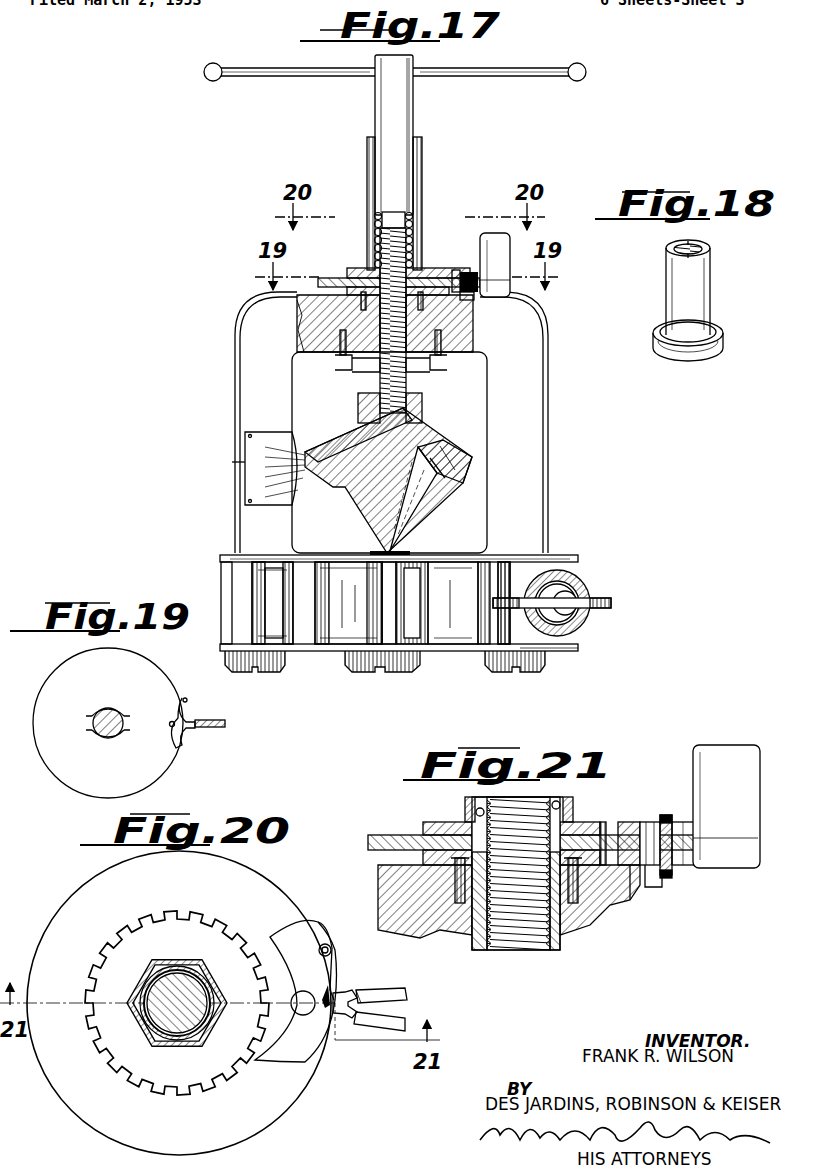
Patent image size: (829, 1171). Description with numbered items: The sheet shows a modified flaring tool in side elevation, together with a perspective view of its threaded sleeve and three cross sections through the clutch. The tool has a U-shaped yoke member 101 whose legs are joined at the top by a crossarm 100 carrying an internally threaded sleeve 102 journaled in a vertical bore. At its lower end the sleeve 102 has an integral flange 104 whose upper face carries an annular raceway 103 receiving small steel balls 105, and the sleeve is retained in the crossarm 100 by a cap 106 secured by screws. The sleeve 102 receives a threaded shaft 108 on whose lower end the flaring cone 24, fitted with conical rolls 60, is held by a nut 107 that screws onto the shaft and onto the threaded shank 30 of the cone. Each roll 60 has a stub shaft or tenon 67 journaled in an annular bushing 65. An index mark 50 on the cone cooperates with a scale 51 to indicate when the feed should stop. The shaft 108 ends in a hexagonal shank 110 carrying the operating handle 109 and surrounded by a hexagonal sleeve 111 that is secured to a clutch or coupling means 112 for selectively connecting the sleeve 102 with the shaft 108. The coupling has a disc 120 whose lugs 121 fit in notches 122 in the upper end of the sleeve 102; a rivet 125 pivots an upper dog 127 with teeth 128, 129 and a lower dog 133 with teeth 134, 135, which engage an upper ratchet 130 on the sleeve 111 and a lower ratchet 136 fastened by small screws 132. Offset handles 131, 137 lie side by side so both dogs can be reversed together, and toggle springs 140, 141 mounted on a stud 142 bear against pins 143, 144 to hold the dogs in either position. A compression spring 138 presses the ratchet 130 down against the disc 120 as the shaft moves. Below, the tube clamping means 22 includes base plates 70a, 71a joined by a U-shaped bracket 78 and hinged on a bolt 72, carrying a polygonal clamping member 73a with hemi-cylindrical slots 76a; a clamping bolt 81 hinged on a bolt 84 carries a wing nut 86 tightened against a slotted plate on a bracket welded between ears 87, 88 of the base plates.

In FIG. 17, the tube clamping means 22 is at (603, 580).
In FIG. 17, the flaring cone 24 is at (356, 505).
In FIG. 17, the threaded shank 30 is at (372, 412).
In FIG. 17, the index mark 50 is at (295, 440).
In FIG. 17, the scale 51 is at (232, 462).
In FIG. 17, the roller 60 is at (425, 510).
In FIG. 17, the annular bushing 65 is at (466, 472).
In FIG. 17, the stub shaft 67 is at (440, 458).
In FIG. 17, the base plate 70a is at (220, 555).
In FIG. 17, the base plate 71a is at (220, 648).
In FIG. 17, the hinge bolt 72 is at (242, 660).
In FIG. 17, the polygonal tube clamping member 73a is at (395, 565).
In FIG. 17, the hemi-cylindrical slot 76a is at (343, 640).
In FIG. 17, the U-shaped bracket 78 is at (228, 580).
In FIG. 17, the clamping bolt 81 is at (577, 600).
In FIG. 17, the bolt 84 is at (533, 667).
In FIG. 17, the wing nut 86 is at (612, 603).
In FIG. 17, the ear 87 is at (572, 556).
In FIG. 17, the ear 88 is at (575, 651).
In FIG. 17, the crossarm 100 is at (460, 338).
In FIG. 17, the yoke member 101 is at (549, 352).
In FIG. 17, the internally threaded sleeve 102 is at (316, 334).
In FIG. 18, the internally threaded sleeve 102 is at (708, 290).
In FIG. 19, the internally threaded sleeve 102 is at (118, 705).
In FIG. 21, the internally threaded sleeve 102 is at (552, 940).
In FIG. 18, the annular raceway 103 is at (660, 322).
In FIG. 17, the integral flange 104 is at (368, 372).
In FIG. 18, the integral flange 104 is at (722, 342).
In FIG. 17, the steel balls 105 is at (350, 366).
In FIG. 17, the cap 106 is at (440, 368).
In FIG. 17, the nut 107 is at (422, 402).
In FIG. 17, the threaded shaft 108 is at (405, 385).
In FIG. 19, the threaded shaft 108 is at (112, 735).
In FIG. 20, the threaded shaft 108 is at (181, 973).
In FIG. 21, the threaded shaft 108 is at (535, 935).
In FIG. 17, the operating handle 109 is at (586, 72).
In FIG. 17, the hexagonal shank 110 is at (413, 109).
In FIG. 17, the hexagonal sleeve 111 is at (422, 152).
In FIG. 20, the hexagonal sleeve 111 is at (200, 975).
In FIG. 21, the hexagonal sleeve 111 is at (575, 803).
In FIG. 17, the coupling means 112 is at (425, 250).
In FIG. 17, the disc 120 is at (342, 278).
In FIG. 19, the disc 120 is at (62, 673).
In FIG. 20, the disc 120 is at (240, 870).
In FIG. 21, the disc 120 is at (368, 843).
In FIG. 19, the lug 121 is at (88, 723).
In FIG. 21, the lug 121 is at (472, 838).
In FIG. 18, the notch 122 is at (693, 258).
In FIG. 19, the rivet 125 is at (176, 724).
In FIG. 20, the rivet 125 is at (305, 1013).
In FIG. 21, the rivet 125 is at (645, 832).
In FIG. 17, the upper dog 127 is at (468, 270).
In FIG. 20, the upper dog 127 is at (303, 950).
In FIG. 21, the upper dog 127 is at (628, 830).
In FIG. 20, the ratchet engaging tooth 128 is at (271, 938).
In FIG. 20, the ratchet engaging tooth 129 is at (273, 1060).
In FIG. 17, the upper ratchet 130 is at (366, 268).
In FIG. 20, the upper ratchet 130 is at (103, 963).
In FIG. 21, the upper ratchet 130 is at (430, 828).
In FIG. 17, the offset handle 131 is at (512, 248).
In FIG. 20, the offset handle 131 is at (392, 1032).
In FIG. 21, the offset handle 131 is at (727, 752).
In FIG. 17, the small screws 132 is at (318, 318).
In FIG. 21, the small screws 132 is at (455, 880).
In FIG. 17, the lower dog 133 is at (468, 300).
In FIG. 21, the lower dog 133 is at (625, 900).
In FIG. 20, the ratchet-engaging tooth 134 is at (268, 936).
In FIG. 20, the ratchet-engaging tooth 135 is at (271, 1057).
In FIG. 17, the lower ratchet 136 is at (320, 292).
In FIG. 20, the lower ratchet 136 is at (126, 930).
In FIG. 21, the lower ratchet 136 is at (423, 858).
In FIG. 17, the offset handle 137 is at (510, 285).
In FIG. 19, the offset handle 137 is at (226, 724).
In FIG. 20, the offset handle 137 is at (408, 995).
In FIG. 21, the offset handle 137 is at (732, 862).
In FIG. 17, the compression spring 138 is at (372, 224).
In FIG. 20, the compression spring 138 is at (205, 1022).
In FIG. 21, the compression spring 138 is at (553, 800).
In FIG. 20, the toggle spring 140 is at (338, 983).
In FIG. 21, the toggle spring 140 is at (674, 822).
In FIG. 21, the toggle spring 141 is at (672, 873).
In FIG. 20, the stud 142 is at (331, 948).
In FIG. 20, the pin 143 is at (327, 995).
In FIG. 21, the pin 143 is at (684, 837).
In FIG. 21, the pin 144 is at (663, 887).